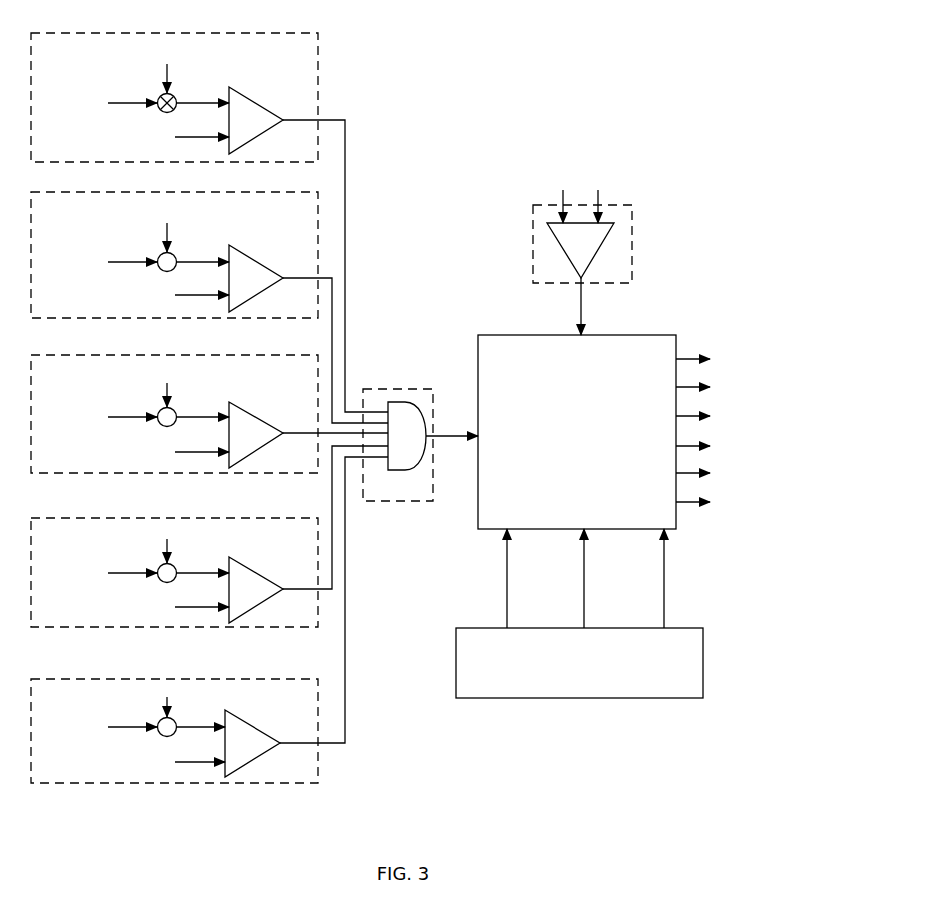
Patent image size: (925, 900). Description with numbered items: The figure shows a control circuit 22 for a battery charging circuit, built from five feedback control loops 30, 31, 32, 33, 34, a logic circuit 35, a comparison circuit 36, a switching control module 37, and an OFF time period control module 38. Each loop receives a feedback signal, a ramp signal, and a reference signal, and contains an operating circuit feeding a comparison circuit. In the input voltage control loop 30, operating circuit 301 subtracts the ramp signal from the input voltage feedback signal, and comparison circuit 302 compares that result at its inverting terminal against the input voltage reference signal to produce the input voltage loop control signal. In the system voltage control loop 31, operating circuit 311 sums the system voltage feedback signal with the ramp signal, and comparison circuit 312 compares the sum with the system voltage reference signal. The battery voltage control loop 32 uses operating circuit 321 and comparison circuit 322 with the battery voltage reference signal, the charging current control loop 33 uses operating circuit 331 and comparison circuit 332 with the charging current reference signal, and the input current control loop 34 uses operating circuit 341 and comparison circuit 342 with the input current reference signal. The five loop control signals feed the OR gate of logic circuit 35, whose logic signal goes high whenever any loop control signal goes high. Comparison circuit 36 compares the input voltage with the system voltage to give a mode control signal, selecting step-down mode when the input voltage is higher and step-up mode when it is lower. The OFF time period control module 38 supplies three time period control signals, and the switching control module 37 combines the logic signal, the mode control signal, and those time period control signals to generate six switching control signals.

The control circuit 22 is at (716, 146).
The feedback control loop 30 is at (198, 33).
The operating circuit 301 is at (176, 98).
The comparison circuit 302 is at (244, 93).
The feedback control loop 31 is at (198, 192).
The operating circuit 311 is at (176, 257).
The comparison circuit 312 is at (244, 251).
The feedback control loop 32 is at (188, 355).
The operating circuit 321 is at (176, 412).
The comparison circuit 322 is at (244, 407).
The feedback control loop 33 is at (200, 518).
The operating circuit 331 is at (176, 568).
The comparison circuit 332 is at (244, 562).
The feedback control loop 34 is at (205, 679).
The operating circuit 341 is at (176, 722).
The comparison circuit 342 is at (243, 718).
The logic circuit 35 is at (400, 389).
The comparison circuit 36 is at (633, 225).
The switching control module 37 is at (677, 345).
The OFF time period control module 38 is at (703, 672).